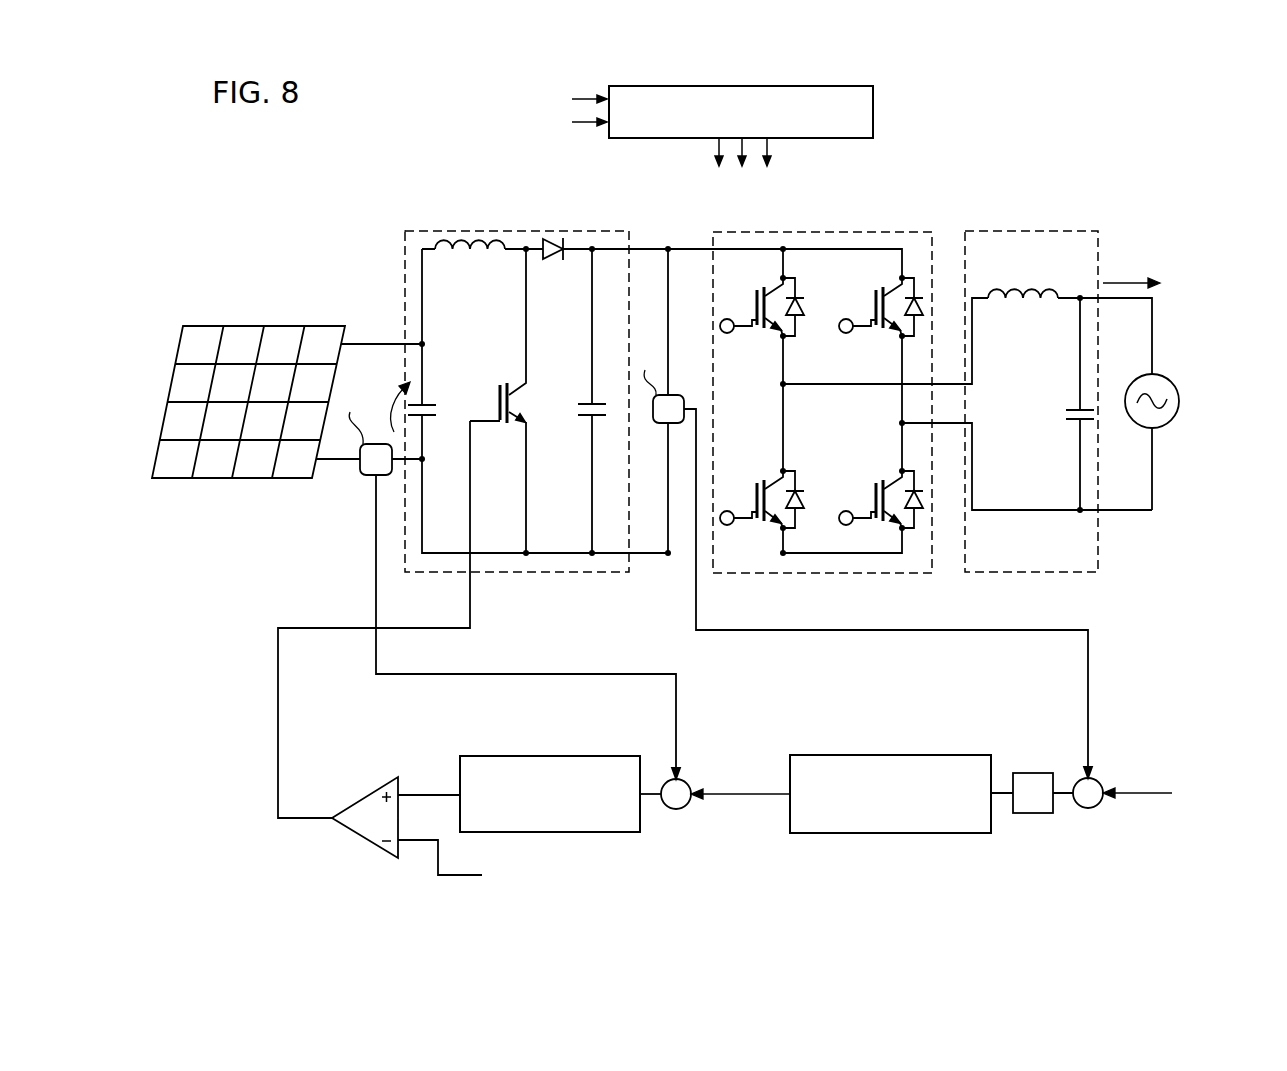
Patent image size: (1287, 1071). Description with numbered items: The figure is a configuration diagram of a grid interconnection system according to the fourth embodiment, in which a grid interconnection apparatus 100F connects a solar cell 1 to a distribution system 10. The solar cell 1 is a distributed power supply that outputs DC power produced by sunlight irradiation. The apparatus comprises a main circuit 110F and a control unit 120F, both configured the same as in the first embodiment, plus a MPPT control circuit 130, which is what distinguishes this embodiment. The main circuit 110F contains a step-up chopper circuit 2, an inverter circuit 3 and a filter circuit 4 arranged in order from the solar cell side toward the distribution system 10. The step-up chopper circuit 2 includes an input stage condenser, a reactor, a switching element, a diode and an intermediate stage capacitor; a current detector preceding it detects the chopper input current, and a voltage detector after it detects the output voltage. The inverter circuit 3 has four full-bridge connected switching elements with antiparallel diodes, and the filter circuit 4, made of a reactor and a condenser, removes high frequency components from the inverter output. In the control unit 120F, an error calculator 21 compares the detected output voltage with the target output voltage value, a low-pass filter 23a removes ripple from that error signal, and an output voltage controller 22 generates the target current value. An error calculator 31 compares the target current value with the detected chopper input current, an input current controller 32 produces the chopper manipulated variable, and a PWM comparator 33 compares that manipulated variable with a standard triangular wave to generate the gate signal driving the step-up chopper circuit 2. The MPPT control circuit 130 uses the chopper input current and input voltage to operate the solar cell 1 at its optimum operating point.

The solar cell 1 is at (248, 326).
The step-up chopper circuit 2 is at (573, 231).
The inverter circuit 3 is at (843, 232).
The filter circuit 4 is at (1033, 231).
The distribution system 10 is at (1180, 401).
The error calculator 21 is at (1091, 809).
The output voltage controller 22 is at (885, 755).
The low-pass filter 23a is at (1030, 773).
The error calculator 31 is at (678, 810).
The input current controller 32 is at (530, 756).
The PWM comparator 33 is at (375, 787).
The grid interconnection apparatus 100F is at (1148, 215).
The main circuit 110F is at (385, 223).
The control unit 120F is at (1145, 661).
The MPPT control circuit 130 is at (875, 109).